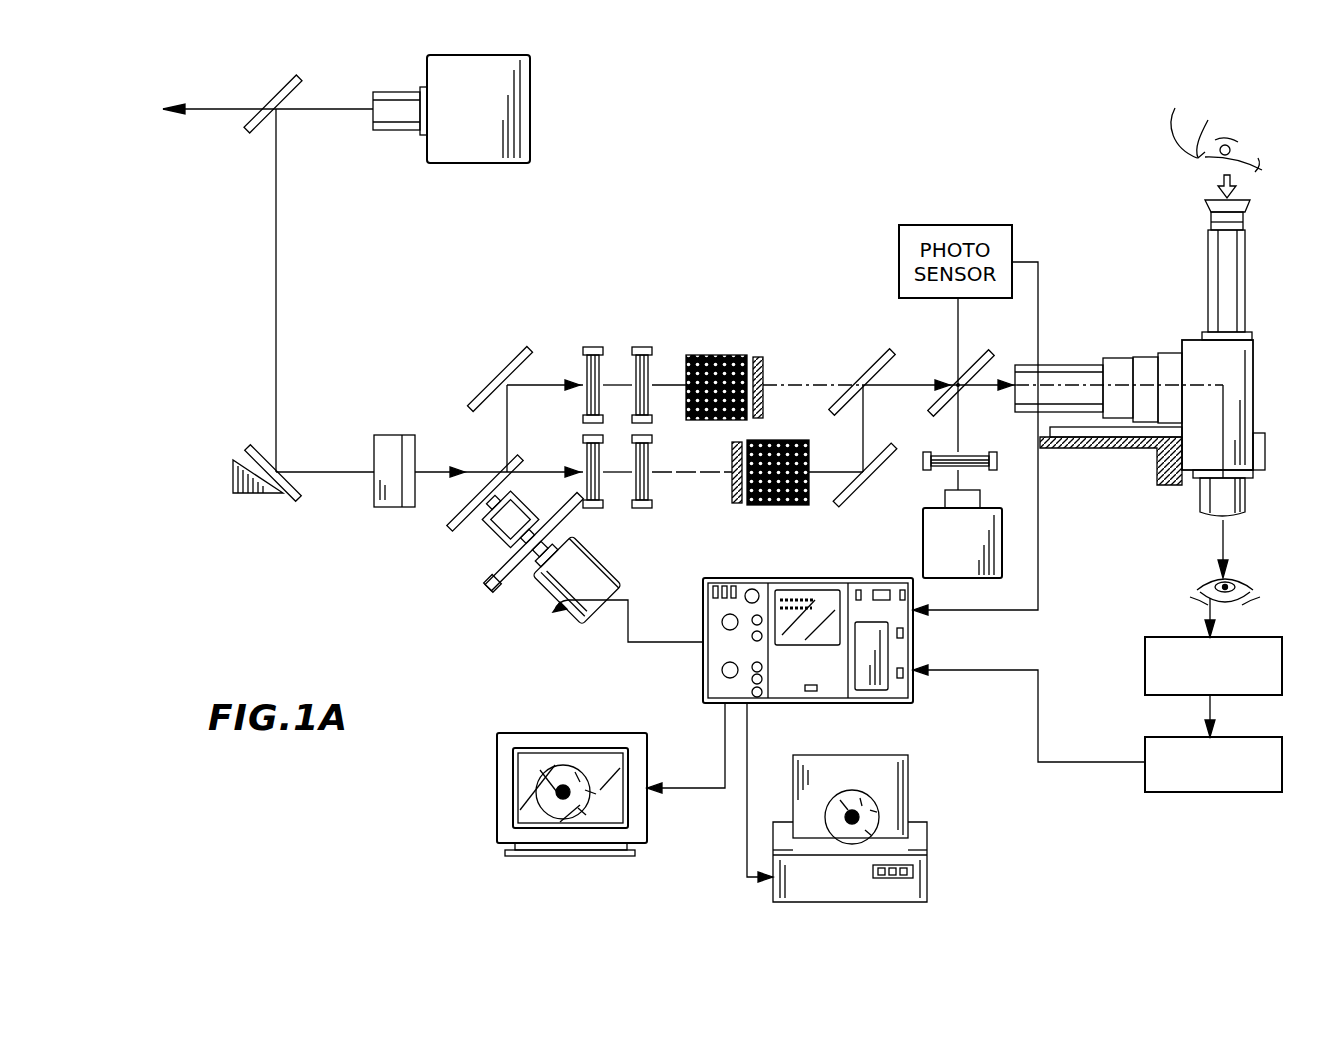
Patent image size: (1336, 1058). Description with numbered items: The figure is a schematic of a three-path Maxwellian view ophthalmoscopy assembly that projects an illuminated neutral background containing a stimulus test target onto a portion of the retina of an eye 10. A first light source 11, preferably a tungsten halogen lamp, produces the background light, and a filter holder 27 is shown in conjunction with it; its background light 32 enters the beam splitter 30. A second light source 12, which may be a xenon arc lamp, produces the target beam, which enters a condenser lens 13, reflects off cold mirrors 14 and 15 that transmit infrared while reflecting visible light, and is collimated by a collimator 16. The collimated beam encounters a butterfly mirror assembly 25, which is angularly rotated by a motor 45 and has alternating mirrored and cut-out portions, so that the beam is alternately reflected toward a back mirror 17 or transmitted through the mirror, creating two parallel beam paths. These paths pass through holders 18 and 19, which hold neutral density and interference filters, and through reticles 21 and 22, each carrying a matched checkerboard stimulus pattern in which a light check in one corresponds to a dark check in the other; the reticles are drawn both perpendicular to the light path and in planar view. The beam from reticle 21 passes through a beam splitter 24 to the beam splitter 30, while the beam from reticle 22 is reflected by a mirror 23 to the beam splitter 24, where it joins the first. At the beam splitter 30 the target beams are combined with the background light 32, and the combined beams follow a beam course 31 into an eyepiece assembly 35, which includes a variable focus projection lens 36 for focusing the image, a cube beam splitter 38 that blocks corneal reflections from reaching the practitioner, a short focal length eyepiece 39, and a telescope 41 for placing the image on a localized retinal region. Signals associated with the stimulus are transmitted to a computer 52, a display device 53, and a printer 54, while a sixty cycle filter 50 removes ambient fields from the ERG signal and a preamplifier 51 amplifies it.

The eye 10 is at (1250, 578).
The first light source 11 is at (970, 557).
The second light source 12 is at (491, 117).
The condenser lens 13 is at (392, 117).
The cold mirror 14 is at (268, 100).
The cold mirror 15 is at (233, 476).
The collimator 16 is at (379, 433).
The back mirror 17 is at (500, 368).
The holder 18 is at (597, 345).
The holder 19 is at (597, 510).
The reticle 21 is at (758, 356).
The reticle 22 is at (770, 506).
The mirror 23 is at (868, 488).
The beam splitter 24 is at (858, 378).
The butterfly mirror assembly 25 is at (452, 522).
The filter holder 27 is at (990, 470).
The beam splitter 30 is at (953, 382).
The beam course 31 is at (985, 388).
The background light 32 is at (963, 436).
The eyepiece assembly 35 is at (1226, 374).
The projection lens 36 is at (1080, 375).
The cube beam splitter 38 is at (1212, 408).
The short focal length eyepiece 39 is at (1248, 498).
The telescope 41 is at (1248, 285).
The motor 45 is at (498, 645).
The 60 cycle filter 50 is at (1223, 677).
The preamplifier 51 is at (1223, 775).
The computer 52 is at (915, 640).
The display device 53 is at (568, 733).
The printer 54 is at (927, 850).